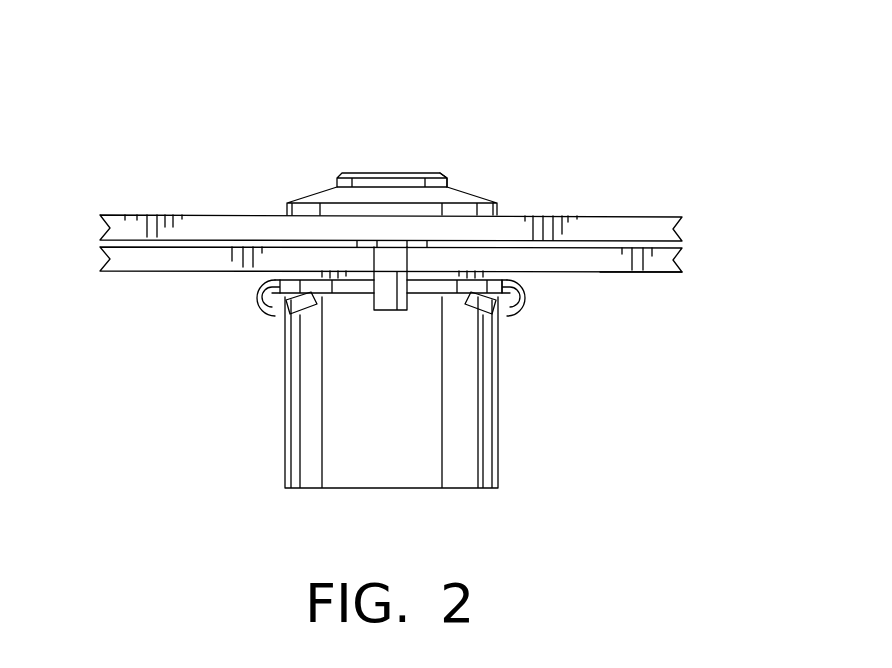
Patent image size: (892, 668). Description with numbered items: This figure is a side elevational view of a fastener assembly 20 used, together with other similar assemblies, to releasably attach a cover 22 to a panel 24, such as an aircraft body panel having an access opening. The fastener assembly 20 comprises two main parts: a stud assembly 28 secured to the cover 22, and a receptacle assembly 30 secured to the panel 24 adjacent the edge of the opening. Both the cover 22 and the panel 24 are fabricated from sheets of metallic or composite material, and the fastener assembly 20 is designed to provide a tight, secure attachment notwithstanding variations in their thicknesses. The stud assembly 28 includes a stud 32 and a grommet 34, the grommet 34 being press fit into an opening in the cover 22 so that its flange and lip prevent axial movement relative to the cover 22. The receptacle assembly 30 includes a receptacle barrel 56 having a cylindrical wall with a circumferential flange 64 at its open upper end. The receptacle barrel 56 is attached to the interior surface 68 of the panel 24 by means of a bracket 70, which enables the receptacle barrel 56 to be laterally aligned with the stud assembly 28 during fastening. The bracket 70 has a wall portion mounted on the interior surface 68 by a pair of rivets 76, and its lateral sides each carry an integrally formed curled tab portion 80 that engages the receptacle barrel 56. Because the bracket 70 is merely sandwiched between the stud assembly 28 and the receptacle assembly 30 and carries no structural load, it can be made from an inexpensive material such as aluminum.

The fastener assembly 20 is at (390, 272).
The cover 22 is at (562, 222).
The panel 24 is at (612, 264).
The stud assembly 28 is at (364, 152).
The receptacle assembly 30 is at (335, 425).
The stud 32 is at (447, 175).
The grommet 34 is at (317, 198).
The receptacle barrel 56 is at (420, 482).
The circumferential flange 64 is at (265, 282).
The interior surface 68 is at (650, 276).
The bracket 70 is at (312, 277).
The rivets 76 is at (393, 310).
The curled tab portion 80 is at (295, 316).